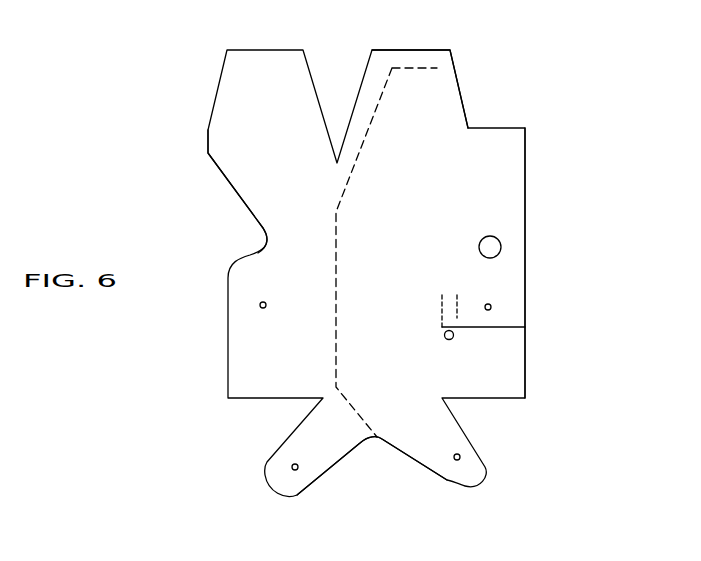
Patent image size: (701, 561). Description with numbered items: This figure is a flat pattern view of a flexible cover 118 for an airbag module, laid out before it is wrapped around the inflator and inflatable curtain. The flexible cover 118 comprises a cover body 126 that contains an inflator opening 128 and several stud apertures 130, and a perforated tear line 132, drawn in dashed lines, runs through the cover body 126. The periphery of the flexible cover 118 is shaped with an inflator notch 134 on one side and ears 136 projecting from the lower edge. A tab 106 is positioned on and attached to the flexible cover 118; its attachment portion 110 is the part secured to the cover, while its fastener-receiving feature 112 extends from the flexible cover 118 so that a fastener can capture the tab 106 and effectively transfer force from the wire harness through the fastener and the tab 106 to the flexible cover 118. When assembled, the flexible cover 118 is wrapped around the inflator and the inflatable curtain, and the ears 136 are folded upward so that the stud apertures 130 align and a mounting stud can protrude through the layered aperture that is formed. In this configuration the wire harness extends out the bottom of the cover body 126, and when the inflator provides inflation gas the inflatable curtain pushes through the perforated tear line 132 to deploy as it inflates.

The tab 106 is at (455, 330).
The attachment portion 110 is at (457, 318).
The fastener-receiving feature 112 is at (451, 338).
The flexible cover 118 is at (552, 165).
The cover body 126 is at (438, 103).
The inflator opening 128 is at (501, 242).
The stud apertures 130 is at (261, 307).
The perforated tear line 132 is at (390, 71).
The inflator notch 134 is at (222, 217).
The ears 136 is at (327, 455).